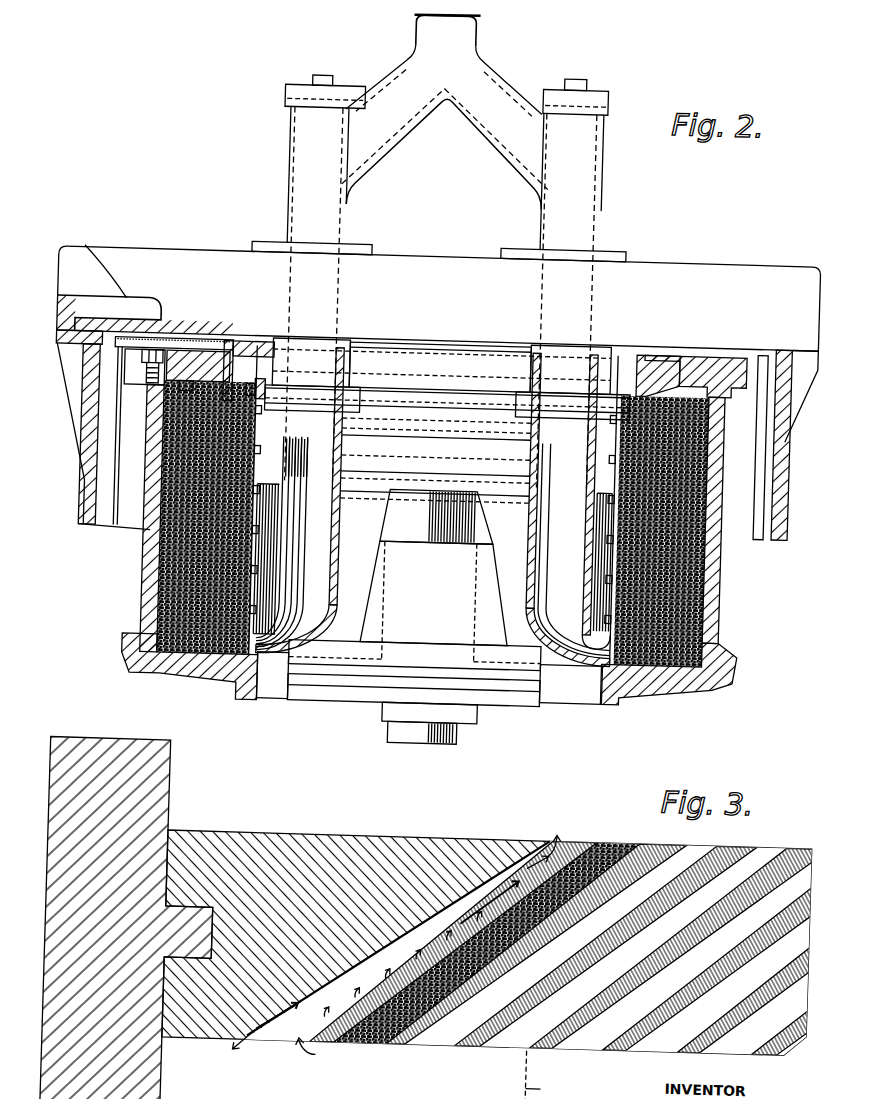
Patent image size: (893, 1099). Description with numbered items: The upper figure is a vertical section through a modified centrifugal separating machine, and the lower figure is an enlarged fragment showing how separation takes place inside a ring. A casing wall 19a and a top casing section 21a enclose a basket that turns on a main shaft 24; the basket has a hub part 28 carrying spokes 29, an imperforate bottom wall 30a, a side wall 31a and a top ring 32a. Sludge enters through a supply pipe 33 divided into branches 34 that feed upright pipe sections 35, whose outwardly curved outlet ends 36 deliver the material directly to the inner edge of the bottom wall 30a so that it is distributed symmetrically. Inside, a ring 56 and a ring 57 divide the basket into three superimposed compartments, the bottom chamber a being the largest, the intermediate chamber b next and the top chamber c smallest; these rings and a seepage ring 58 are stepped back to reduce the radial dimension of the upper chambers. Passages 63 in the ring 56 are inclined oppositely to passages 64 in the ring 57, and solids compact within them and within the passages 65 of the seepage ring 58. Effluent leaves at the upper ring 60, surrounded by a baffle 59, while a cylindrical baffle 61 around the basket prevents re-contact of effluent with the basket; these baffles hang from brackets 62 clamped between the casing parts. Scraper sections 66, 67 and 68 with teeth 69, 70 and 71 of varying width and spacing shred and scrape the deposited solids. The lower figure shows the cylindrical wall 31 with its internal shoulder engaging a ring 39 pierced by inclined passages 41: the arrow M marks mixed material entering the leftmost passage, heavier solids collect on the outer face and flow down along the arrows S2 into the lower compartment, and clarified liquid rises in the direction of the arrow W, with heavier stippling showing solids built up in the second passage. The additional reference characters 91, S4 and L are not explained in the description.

In FIG. 2, the supply pipe 33 is at (468, 7).
In FIG. 2, the branches 34 is at (468, 104).
In FIG. 2, the top casing section 21a is at (728, 263).
In FIG. 2, the brackets 62 is at (774, 316).
In FIG. 2, the baffle 59 is at (152, 345).
In FIG. 2, the seepage ring 58 is at (236, 341).
In FIG. 2, the upper ring 60 is at (240, 336).
In FIG. 2, the passages 65 is at (258, 338).
In FIG. 2, the scraper section 68 is at (263, 373).
In FIG. 2, the teeth 71 is at (254, 378).
In FIG. 2, the ring 57 is at (189, 382).
In FIG. 2, the cylindrical baffle 61 is at (98, 435).
In FIG. 2, the passages 64 is at (160, 410).
In FIG. 2, the passages 63 is at (170, 460).
In FIG. 2, the ring 56 is at (150, 510).
In FIG. 2, the top ring 32a is at (707, 342).
In FIG. 2, the chamber c is at (728, 379).
In FIG. 2, the chamber b is at (705, 436).
In FIG. 2, the casing wall 19a is at (797, 445).
In FIG. 2, the scraper section 67 is at (290, 423).
In FIG. 2, the teeth 70 is at (305, 430).
In FIG. 2, the upright pipe sections 35 is at (348, 506).
In FIG. 2, the teeth 69 is at (289, 513).
In FIG. 2, the scraper section 66 is at (290, 552).
In FIG. 2, the hub part 28 is at (499, 587).
In FIG. 2, the side wall 31a is at (729, 561).
In FIG. 2, the bottom chamber a is at (727, 605).
In FIG. 2, the bottom wall 30a is at (663, 673).
In FIG. 2, the outlet ends 36 is at (300, 653).
In FIG. 2, the spokes 29 is at (274, 685).
In FIG. 2, the main shaft 24 is at (408, 720).
In FIG. 3, the cylindrical wall 31 is at (154, 789).
In FIG. 3, the tongue 91 is at (190, 904).
In FIG. 3, the ring 39 is at (340, 834).
In FIG. 3, the passages 41 is at (657, 1026).
In FIG. 3, the arrow W is at (536, 851).
In FIG. 3, the arrows S2 is at (375, 962).
In FIG. 3, the stream S4 is at (403, 964).
In FIG. 3, the arrow M is at (308, 1056).
In FIG. 3, the length L is at (540, 1075).